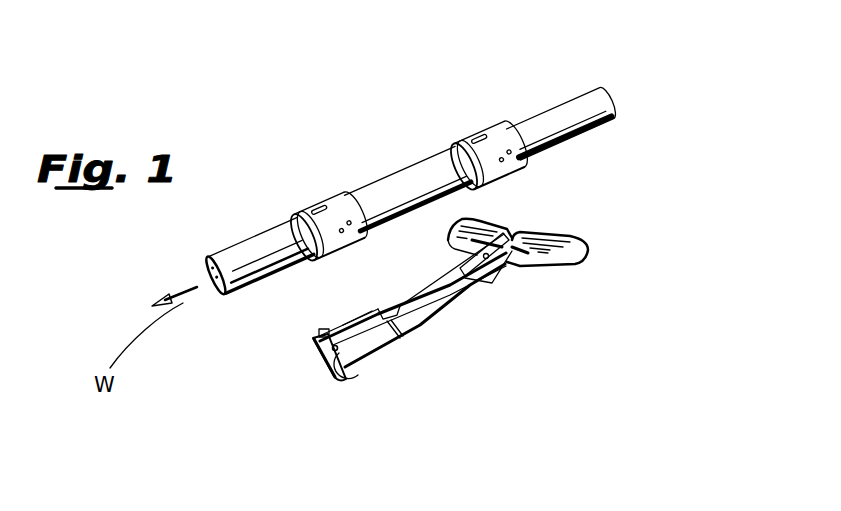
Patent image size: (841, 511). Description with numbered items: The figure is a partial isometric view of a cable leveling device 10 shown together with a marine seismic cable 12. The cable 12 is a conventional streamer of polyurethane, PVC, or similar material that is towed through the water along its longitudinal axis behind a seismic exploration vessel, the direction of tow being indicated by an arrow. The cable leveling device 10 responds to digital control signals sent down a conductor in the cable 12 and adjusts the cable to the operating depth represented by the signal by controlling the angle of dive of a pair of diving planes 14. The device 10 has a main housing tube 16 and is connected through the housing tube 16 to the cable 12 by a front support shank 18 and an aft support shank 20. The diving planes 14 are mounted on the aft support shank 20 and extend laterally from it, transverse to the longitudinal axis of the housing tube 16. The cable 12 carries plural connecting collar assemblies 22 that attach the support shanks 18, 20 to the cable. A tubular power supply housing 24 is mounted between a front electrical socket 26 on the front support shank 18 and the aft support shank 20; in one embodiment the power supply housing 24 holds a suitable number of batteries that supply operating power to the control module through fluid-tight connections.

The cable leveling device 10 is at (445, 317).
The seismic cable 12 is at (565, 103).
The diving planes 14 is at (580, 238).
The main housing tube 16 is at (388, 296).
The front support shank 18 is at (401, 340).
The aft support shank 20 is at (478, 302).
The connecting collar assemblies 22 is at (316, 192).
The tubular power supply housing 24 is at (428, 280).
The front electrical socket 26 is at (334, 312).